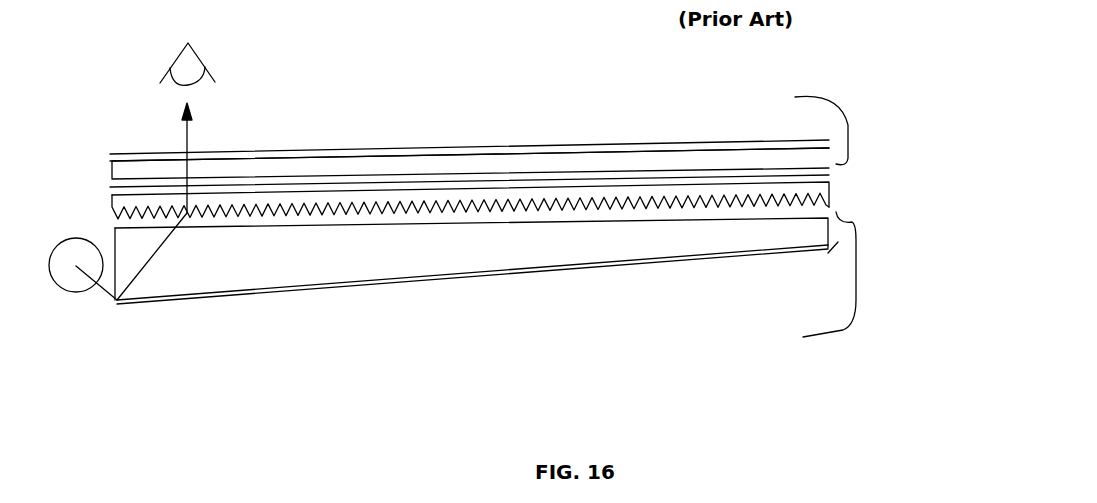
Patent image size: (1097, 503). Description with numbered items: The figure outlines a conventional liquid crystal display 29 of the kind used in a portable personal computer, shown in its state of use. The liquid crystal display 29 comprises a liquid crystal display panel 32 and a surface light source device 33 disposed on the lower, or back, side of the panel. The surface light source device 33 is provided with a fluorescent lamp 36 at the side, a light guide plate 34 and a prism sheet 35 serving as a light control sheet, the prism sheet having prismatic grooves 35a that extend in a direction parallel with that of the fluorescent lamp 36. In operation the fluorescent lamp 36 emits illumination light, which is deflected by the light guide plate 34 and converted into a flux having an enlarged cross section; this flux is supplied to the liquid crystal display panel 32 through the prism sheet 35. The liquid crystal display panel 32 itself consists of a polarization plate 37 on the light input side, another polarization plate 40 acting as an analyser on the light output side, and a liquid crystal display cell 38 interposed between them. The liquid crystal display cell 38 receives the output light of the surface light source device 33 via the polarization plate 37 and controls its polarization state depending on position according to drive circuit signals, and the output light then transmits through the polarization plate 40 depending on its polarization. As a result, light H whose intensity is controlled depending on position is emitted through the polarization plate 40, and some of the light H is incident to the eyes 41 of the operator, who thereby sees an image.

The liquid crystal display 29 is at (614, 141).
The liquid crystal display panel 32 is at (805, 123).
The surface light source device 33 is at (812, 283).
The light guide plate 34 is at (449, 281).
The prism sheet 35 is at (363, 208).
The prismatic grooves 35a is at (273, 208).
The fluorescent lamp 36 is at (75, 282).
The polarization plate 37 is at (423, 182).
The liquid crystal display cell 38 is at (345, 166).
The polarization plate (analyser) 40 is at (287, 150).
The eyes 41 is at (192, 67).
The light H is at (192, 138).